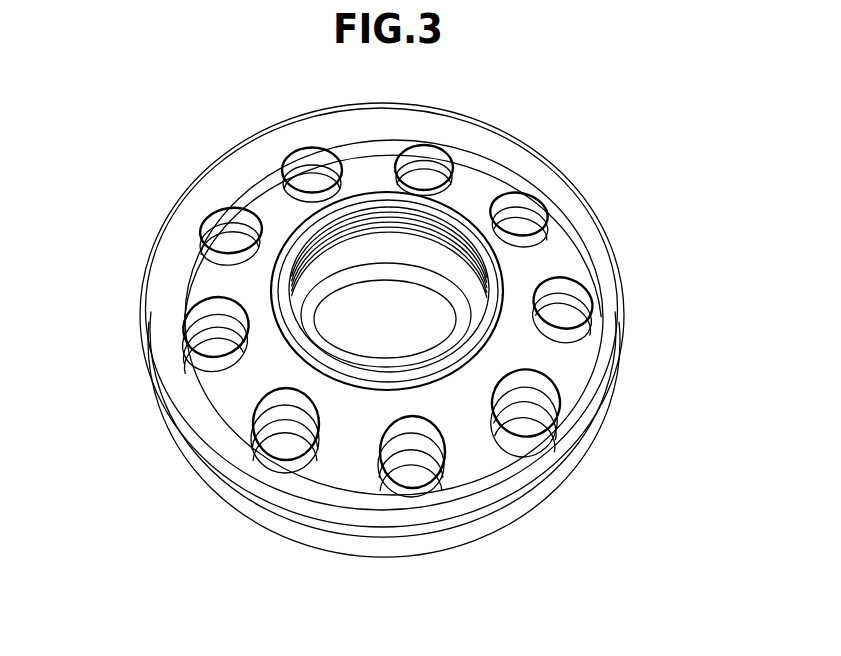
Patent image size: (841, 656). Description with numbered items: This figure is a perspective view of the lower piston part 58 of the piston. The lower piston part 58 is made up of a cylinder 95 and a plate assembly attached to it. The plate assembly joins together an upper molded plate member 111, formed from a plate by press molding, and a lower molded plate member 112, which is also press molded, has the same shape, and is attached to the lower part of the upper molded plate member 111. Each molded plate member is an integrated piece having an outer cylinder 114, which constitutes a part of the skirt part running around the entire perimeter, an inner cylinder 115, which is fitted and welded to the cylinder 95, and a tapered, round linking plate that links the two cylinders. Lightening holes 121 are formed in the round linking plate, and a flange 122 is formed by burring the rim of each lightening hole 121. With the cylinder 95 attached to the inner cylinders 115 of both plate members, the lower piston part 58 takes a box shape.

The lower piston part 58 is at (183, 160).
The upper molded plate member 111 is at (513, 138).
The lower molded plate member 112 is at (303, 544).
The outer cylinder 114 is at (417, 107).
The inner cylinder 115 is at (457, 377).
The lightening hole 121 is at (500, 198).
The flange 122 is at (533, 240).
The cylinder 95 is at (490, 278).